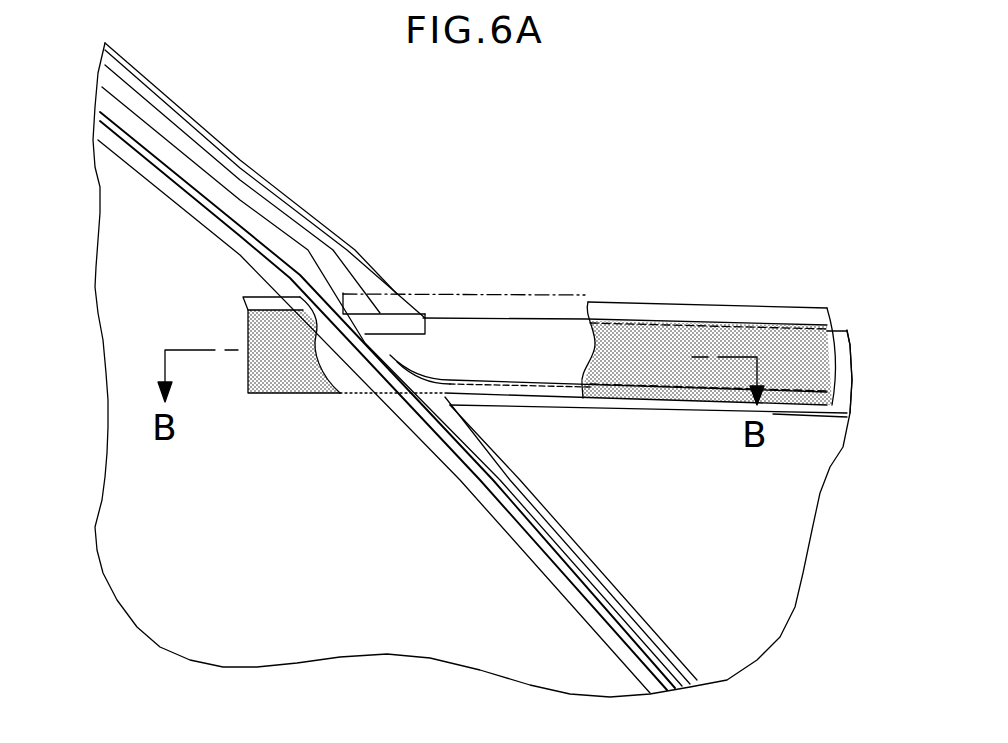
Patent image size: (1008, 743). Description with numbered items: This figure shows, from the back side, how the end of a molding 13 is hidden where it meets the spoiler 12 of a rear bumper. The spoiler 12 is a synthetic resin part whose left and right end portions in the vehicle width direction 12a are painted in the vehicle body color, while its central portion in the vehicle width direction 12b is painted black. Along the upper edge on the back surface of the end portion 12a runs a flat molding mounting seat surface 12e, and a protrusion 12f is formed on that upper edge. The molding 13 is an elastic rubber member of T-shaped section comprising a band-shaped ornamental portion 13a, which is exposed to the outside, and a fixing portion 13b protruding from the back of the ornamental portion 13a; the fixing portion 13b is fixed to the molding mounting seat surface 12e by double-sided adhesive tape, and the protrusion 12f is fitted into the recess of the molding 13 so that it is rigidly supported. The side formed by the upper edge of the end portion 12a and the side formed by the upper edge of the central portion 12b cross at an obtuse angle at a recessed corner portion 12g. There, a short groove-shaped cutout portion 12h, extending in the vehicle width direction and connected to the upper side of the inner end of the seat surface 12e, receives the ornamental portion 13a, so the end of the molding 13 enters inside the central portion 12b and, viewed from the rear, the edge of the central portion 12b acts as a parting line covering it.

The spoiler 12 is at (390, 368).
The end portion in the vehicle width direction 12a is at (842, 320).
The central portion in the vehicle width direction 12b is at (257, 153).
The molding mounting seat surface 12e is at (537, 333).
The protrusion 12f is at (492, 318).
The recessed corner portion 12g is at (427, 330).
The cutout portion 12h is at (373, 303).
The molding 13 is at (692, 292).
The ornamental portion 13a is at (262, 307).
The fixing portion 13b is at (285, 385).